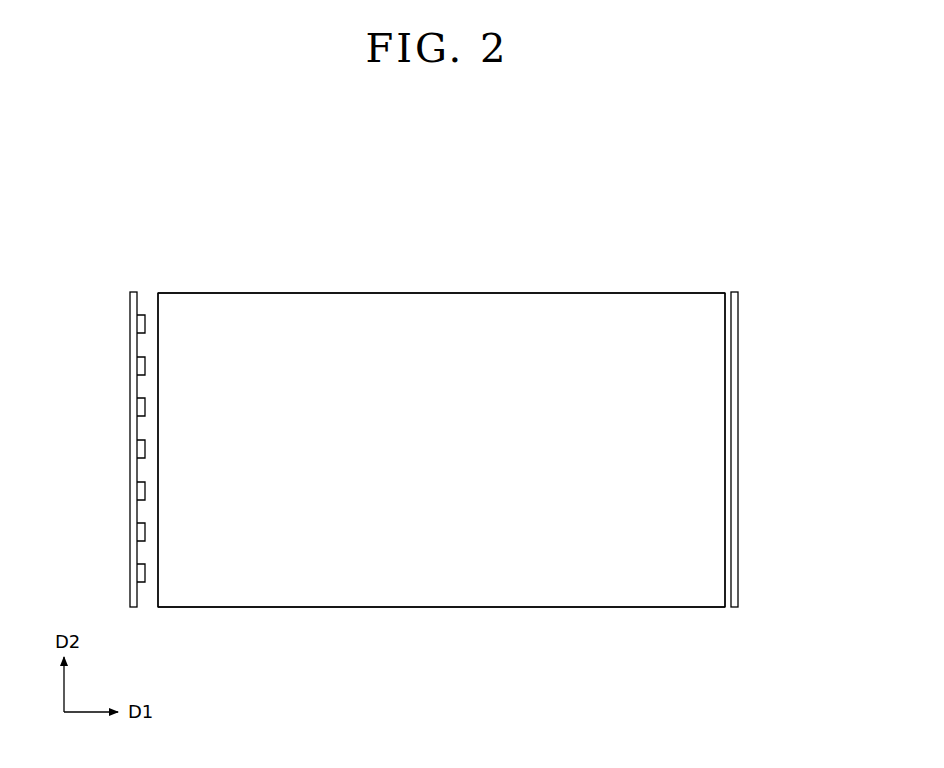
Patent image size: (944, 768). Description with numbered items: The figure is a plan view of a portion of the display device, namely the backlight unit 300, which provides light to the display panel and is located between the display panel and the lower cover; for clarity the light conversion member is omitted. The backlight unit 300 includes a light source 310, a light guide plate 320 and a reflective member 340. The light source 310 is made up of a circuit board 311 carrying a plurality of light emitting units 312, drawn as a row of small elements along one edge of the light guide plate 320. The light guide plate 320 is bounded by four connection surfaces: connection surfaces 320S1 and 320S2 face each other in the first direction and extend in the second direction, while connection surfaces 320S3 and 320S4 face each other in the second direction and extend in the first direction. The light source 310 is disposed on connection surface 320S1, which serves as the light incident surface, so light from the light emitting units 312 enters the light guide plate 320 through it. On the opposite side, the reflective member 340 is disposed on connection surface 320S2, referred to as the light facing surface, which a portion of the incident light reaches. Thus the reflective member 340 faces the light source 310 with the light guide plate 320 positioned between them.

The backlight unit 300 is at (712, 221).
The light source 310 is at (200, 227).
The circuit board 311 is at (134, 292).
The light emitting units 312 is at (141, 313).
The light guide plate 320 is at (710, 471).
The connection surface 320S1 is at (158, 552).
The connection surface 320S2 is at (727, 557).
The connection surface 320S3 is at (713, 607).
The connection surface 320S4 is at (713, 293).
The reflective member 340 is at (740, 390).